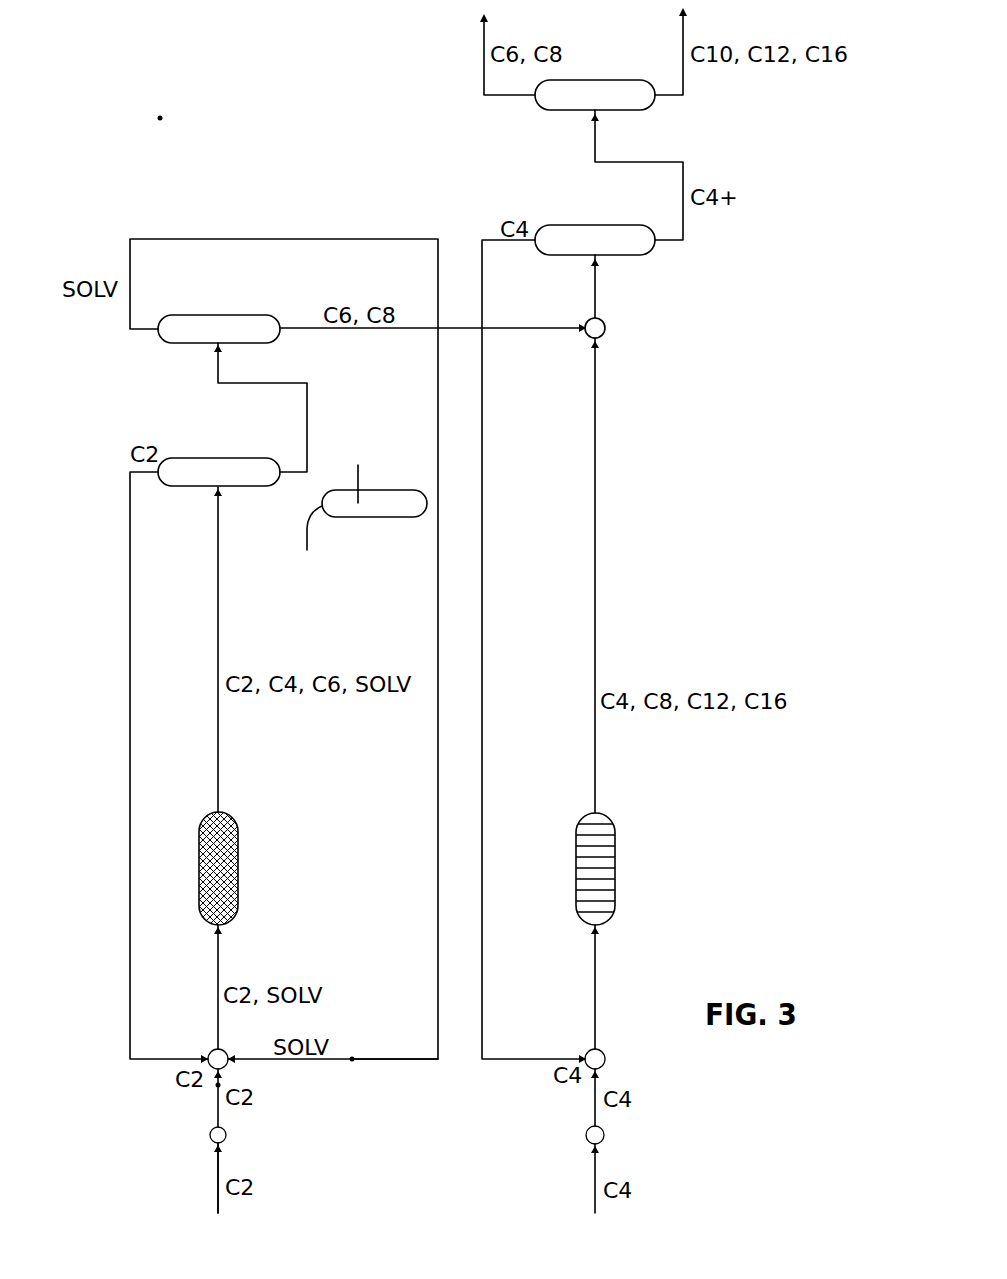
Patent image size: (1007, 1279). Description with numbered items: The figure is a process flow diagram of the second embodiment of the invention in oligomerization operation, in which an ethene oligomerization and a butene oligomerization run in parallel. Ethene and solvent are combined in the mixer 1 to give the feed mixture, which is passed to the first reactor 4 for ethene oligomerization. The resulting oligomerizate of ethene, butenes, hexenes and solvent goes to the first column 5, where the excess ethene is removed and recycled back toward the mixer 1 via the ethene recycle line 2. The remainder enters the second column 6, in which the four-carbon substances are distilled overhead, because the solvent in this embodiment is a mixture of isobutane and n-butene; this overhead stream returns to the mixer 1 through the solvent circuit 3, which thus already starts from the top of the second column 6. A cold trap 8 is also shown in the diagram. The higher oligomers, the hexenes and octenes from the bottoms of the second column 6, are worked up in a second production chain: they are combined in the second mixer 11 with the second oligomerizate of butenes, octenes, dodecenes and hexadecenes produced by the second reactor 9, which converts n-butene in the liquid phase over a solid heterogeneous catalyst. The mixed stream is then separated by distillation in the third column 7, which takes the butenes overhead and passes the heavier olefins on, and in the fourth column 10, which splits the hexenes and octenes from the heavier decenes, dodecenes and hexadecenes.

The mixer 1 is at (224, 1064).
The ethene recycle line 2 is at (131, 727).
The solvent circuit 3 is at (352, 1060).
The first reactor 4 is at (200, 872).
The first column 5 is at (218, 458).
The second column 6 is at (218, 315).
The third column 7 is at (595, 225).
The cold trap 8 is at (375, 512).
The second reactor 9 is at (606, 838).
The fourth column 10 is at (595, 80).
The second mixer 11 is at (605, 333).